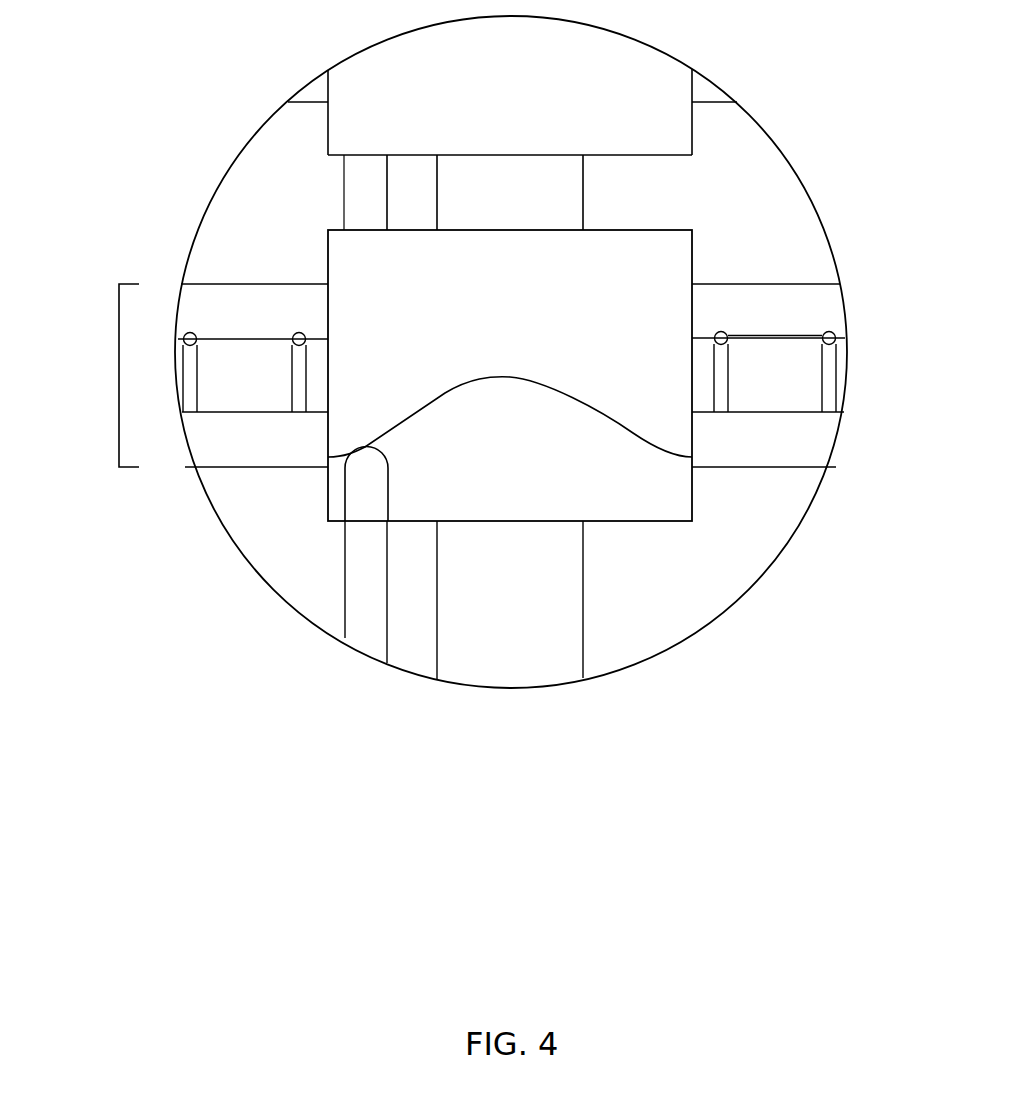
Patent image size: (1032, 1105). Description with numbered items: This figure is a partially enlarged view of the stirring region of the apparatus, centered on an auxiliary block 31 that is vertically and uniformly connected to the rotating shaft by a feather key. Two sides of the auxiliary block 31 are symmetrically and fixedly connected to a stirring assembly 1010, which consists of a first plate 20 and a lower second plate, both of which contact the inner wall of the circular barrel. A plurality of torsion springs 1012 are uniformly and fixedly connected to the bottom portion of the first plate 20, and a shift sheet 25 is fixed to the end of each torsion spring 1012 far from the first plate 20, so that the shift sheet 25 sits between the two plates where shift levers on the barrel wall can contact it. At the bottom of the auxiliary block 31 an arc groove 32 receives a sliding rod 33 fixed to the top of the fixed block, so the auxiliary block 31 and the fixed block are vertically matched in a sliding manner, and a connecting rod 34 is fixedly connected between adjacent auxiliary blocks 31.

The first plate 20 is at (772, 290).
The shift sheet 25 is at (829, 375).
The auxiliary block 31 is at (337, 255).
The arc groove 32 is at (633, 433).
The sliding rod 33 is at (358, 485).
The connecting rod 34 is at (363, 183).
The stirring assembly 1010 is at (78, 375).
The torsion spring 1012 is at (805, 337).